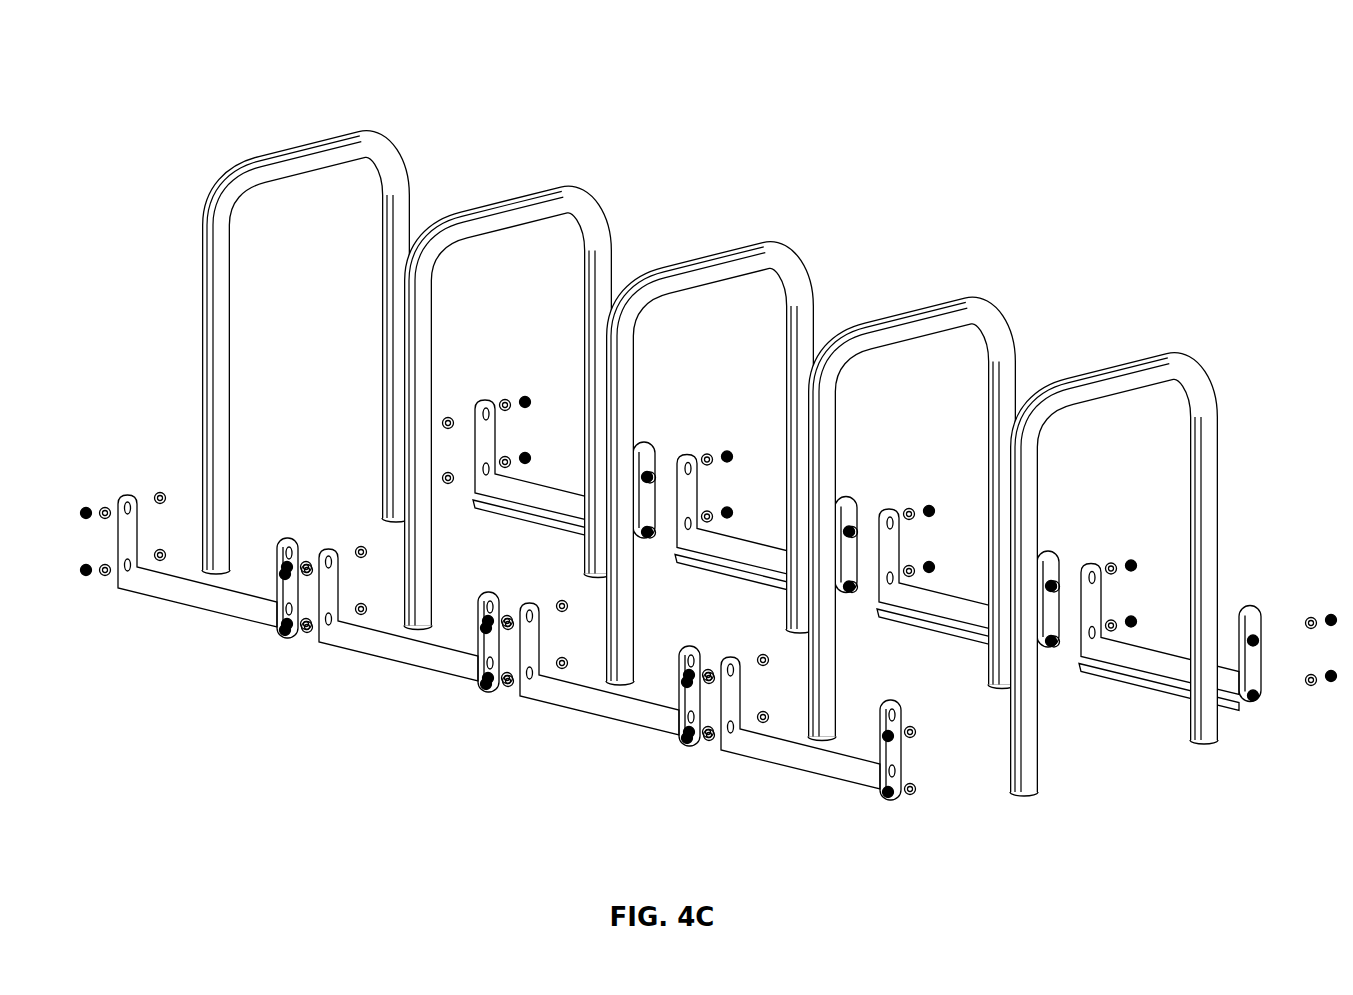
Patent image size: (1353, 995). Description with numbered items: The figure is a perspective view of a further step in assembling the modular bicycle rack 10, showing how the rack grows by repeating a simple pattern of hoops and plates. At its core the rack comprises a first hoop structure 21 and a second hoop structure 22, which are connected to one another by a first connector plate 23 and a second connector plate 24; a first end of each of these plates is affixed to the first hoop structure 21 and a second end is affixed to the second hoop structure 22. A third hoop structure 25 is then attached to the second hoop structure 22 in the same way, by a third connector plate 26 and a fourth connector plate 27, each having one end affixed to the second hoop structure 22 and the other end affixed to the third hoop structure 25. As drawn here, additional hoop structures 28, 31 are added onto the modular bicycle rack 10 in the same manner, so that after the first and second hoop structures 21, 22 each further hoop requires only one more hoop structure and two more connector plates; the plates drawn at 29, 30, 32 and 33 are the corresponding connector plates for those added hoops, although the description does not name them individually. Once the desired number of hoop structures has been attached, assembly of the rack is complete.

The modular bicycle rack 10 is at (245, 98).
The first hoop structure 21 is at (203, 228).
The second hoop structure 22 is at (505, 212).
The first connector plate 23 is at (185, 603).
The second connector plate 24 is at (488, 400).
The third hoop structure 25 is at (706, 267).
The third connector plate 26 is at (388, 650).
The fourth connector plate 27 is at (688, 455).
The additional hoop structure 28 is at (903, 323).
The third base rail 29 is at (600, 707).
The third mounting bracket 30 is at (888, 508).
The additional hoop structure 31 is at (1108, 378).
The fourth base rail 32 is at (786, 764).
The fourth mounting bracket 33 is at (1087, 563).